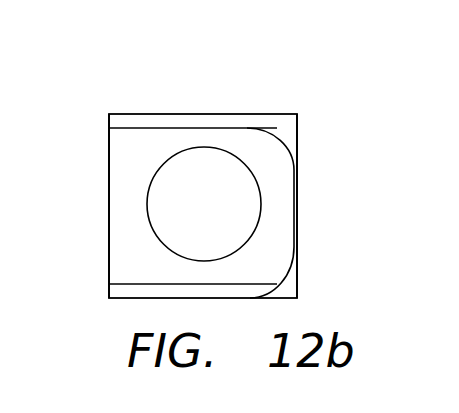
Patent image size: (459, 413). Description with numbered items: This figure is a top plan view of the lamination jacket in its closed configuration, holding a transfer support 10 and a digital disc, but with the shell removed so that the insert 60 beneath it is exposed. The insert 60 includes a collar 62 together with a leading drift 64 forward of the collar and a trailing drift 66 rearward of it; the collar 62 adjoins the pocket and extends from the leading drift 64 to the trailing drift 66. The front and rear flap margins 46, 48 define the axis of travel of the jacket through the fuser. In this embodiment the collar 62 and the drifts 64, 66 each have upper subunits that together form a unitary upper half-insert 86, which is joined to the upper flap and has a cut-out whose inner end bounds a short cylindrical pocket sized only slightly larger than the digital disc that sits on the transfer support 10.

The transfer support 10 is at (297, 128).
The front flap margin 46 is at (296, 222).
The rear flap margin 48 is at (108, 170).
The insert 60 is at (193, 206).
The collar 62 is at (195, 141).
The leading drift 64 is at (290, 187).
The trailing drift 66 is at (142, 216).
The upper half-insert 86 is at (188, 283).